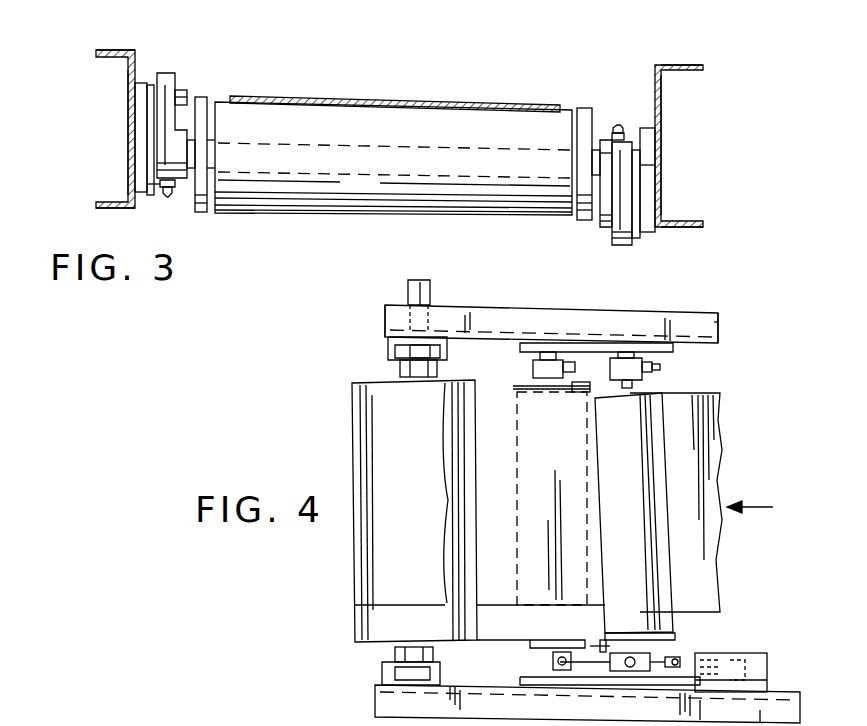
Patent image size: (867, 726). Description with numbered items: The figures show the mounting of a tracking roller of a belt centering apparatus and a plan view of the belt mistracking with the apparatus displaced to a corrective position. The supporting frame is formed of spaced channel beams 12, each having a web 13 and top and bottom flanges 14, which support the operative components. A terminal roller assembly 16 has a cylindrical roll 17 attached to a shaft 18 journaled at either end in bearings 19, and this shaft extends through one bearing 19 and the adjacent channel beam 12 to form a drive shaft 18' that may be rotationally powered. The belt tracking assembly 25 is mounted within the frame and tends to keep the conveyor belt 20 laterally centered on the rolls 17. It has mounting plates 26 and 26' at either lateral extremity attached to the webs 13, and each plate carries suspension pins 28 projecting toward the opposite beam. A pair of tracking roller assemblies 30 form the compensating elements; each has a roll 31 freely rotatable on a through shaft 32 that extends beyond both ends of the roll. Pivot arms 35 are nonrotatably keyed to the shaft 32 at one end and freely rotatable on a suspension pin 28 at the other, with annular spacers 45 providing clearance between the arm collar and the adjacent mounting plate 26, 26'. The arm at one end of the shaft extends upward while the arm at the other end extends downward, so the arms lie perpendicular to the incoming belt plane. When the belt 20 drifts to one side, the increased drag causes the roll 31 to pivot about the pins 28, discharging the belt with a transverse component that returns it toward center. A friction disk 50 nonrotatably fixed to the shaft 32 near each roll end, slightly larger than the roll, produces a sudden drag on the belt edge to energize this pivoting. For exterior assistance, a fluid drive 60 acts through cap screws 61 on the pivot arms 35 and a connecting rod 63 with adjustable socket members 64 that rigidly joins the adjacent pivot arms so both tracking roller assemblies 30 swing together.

In FIG. 3, the channel beam 12 is at (135, 72).
In FIG. 4, the channel beam 12 is at (688, 313).
In FIG. 3, the web 13 is at (128, 84).
In FIG. 3, the flange 14 is at (121, 50).
In FIG. 4, the flange 14 is at (718, 330).
In FIG. 4, the terminal roller assembly 16 is at (378, 343).
In FIG. 4, the cylindrical roll 17 is at (372, 383).
In FIG. 4, the shaft 18 is at (408, 508).
In FIG. 4, the drive shaft 18' is at (392, 299).
In FIG. 4, the bearing 19 is at (388, 348).
In FIG. 3, the conveyor belt 20 is at (390, 100).
In FIG. 4, the conveyor belt 20 is at (716, 425).
In FIG. 4, the belt tracking assembly 25 is at (527, 303).
In FIG. 3, the mounting plate 26 is at (673, 180).
In FIG. 3, the mounting plate 26' is at (120, 137).
In FIG. 4, the mounting plate 26' is at (596, 318).
In FIG. 3, the suspension pin 28 is at (185, 98).
In FIG. 3, the tracking roller assembly 30 is at (212, 54).
In FIG. 4, the tracking roller assembly 30 is at (692, 616).
In FIG. 3, the cylindrical roll 31 is at (565, 108).
In FIG. 4, the cylindrical roll 31 is at (665, 575).
In FIG. 3, the through shaft 32 is at (200, 182).
In FIG. 4, the through shaft 32 is at (672, 648).
In FIG. 3, the pivot arm 35 is at (170, 126).
In FIG. 3, the annular spacer 45 is at (151, 88).
In FIG. 4, the annular spacer 45 is at (533, 362).
In FIG. 3, the friction disk 50 is at (200, 213).
In FIG. 4, the fluid drive 60 is at (748, 650).
In FIG. 3, the cap screw 61 is at (163, 191).
In FIG. 4, the connecting rod 63 is at (610, 362).
In FIG. 3, the socket member 64 is at (165, 182).